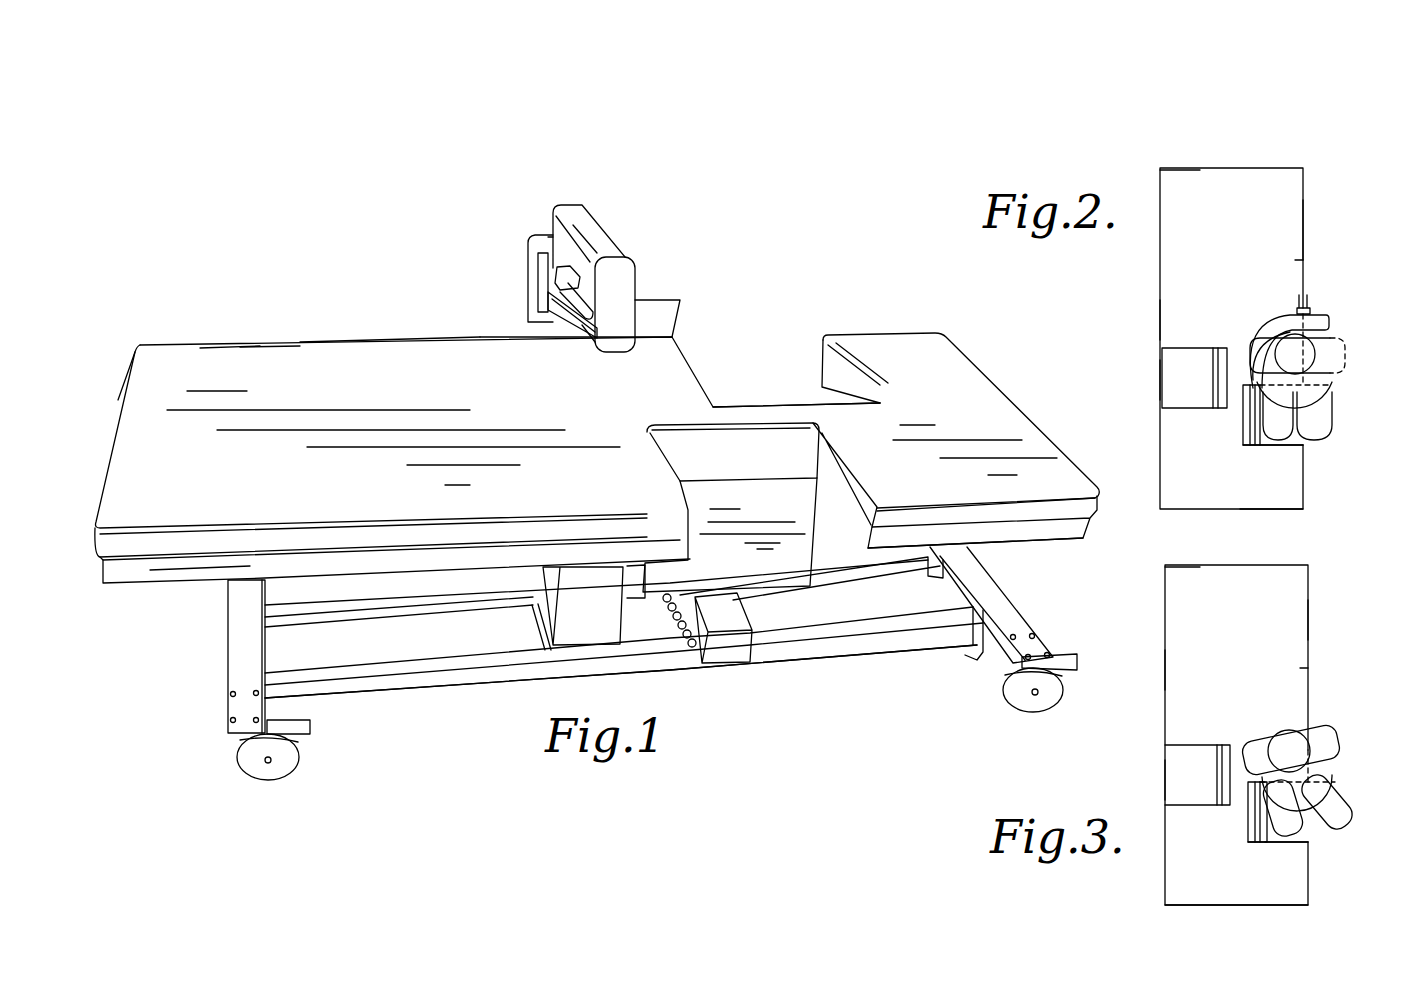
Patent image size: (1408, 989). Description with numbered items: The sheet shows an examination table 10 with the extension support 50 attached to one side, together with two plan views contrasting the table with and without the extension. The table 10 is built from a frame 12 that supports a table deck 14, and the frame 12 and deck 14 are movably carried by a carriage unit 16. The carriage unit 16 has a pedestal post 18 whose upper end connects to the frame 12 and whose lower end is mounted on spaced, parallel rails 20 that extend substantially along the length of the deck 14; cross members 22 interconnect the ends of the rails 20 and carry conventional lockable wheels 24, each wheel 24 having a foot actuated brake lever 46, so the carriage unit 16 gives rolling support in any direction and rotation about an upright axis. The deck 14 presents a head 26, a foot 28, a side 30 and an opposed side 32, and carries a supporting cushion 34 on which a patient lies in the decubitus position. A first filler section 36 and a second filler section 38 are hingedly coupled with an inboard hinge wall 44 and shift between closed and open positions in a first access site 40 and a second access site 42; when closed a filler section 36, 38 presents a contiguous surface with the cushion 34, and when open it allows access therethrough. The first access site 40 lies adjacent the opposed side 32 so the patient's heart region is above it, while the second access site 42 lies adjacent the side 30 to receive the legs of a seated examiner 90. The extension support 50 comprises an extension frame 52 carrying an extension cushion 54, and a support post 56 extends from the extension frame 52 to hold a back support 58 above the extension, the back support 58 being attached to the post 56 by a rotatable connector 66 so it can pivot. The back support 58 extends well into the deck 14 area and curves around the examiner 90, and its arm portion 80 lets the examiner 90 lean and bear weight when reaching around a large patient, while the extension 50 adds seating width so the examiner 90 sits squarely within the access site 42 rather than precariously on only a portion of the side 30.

In FIG. 1, the examination table 10 is at (262, 283).
In FIG. 2, the examination table 10 is at (1147, 185).
In FIG. 3, the examination table 10 is at (1155, 628).
In FIG. 1, the frame 12 is at (122, 577).
In FIG. 1, the table deck 14 is at (340, 337).
In FIG. 2, the table deck 14 is at (1306, 240).
In FIG. 3, the table deck 14 is at (1310, 615).
In FIG. 1, the carriage unit 16 is at (510, 705).
In FIG. 1, the pedestal post 18 is at (585, 627).
In FIG. 1, the rails 20 is at (418, 662).
In FIG. 1, the cross members 22 is at (238, 675).
In FIG. 1, the lockable wheels 24 is at (272, 580).
In FIG. 1, the head 26 is at (1015, 378).
In FIG. 2, the head 26 is at (1282, 512).
In FIG. 3, the head 26 is at (1235, 902).
In FIG. 1, the foot 28 is at (120, 387).
In FIG. 1, the side 30 is at (217, 325).
In FIG. 2, the side 30 is at (1312, 266).
In FIG. 3, the side 30 is at (1320, 668).
In FIG. 1, the opposed side 32 is at (180, 592).
In FIG. 2, the opposed side 32 is at (1150, 322).
In FIG. 3, the opposed side 32 is at (1152, 672).
In FIG. 1, the supporting cushion 34 is at (160, 490).
In FIG. 2, the supporting cushion 34 is at (1218, 197).
In FIG. 3, the supporting cushion 34 is at (1215, 585).
In FIG. 1, the first filler section 36 is at (770, 568).
In FIG. 2, the first filler section 36 is at (1187, 390).
In FIG. 3, the first filler section 36 is at (1212, 805).
In FIG. 2, the second filler section 38 is at (1248, 432).
In FIG. 3, the second filler section 38 is at (1252, 838).
In FIG. 1, the first access site 40 is at (835, 556).
In FIG. 2, the first access site 40 is at (1150, 378).
In FIG. 3, the first access site 40 is at (1152, 775).
In FIG. 1, the second access site 42 is at (783, 372).
In FIG. 2, the second access site 42 is at (1325, 448).
In FIG. 3, the second access site 42 is at (1315, 842).
In FIG. 1, the inboard hinge wall 44 is at (685, 425).
In FIG. 1, the foot actuated brake lever 46 is at (310, 727).
In FIG. 1, the extension support 50 is at (630, 233).
In FIG. 2, the extension support 50 is at (1333, 352).
In FIG. 1, the extension frame 52 is at (560, 325).
In FIG. 1, the extension cushion 54 is at (645, 312).
In FIG. 1, the support post 56 is at (532, 275).
In FIG. 1, the back support 58 is at (568, 205).
In FIG. 2, the back support 58 is at (1320, 323).
In FIG. 2, the rotatable connector 66 is at (1312, 310).
In FIG. 2, the arm portion 80 is at (1253, 378).
In FIG. 2, the examiner 90 is at (1315, 392).
In FIG. 3, the examiner 90 is at (1325, 743).